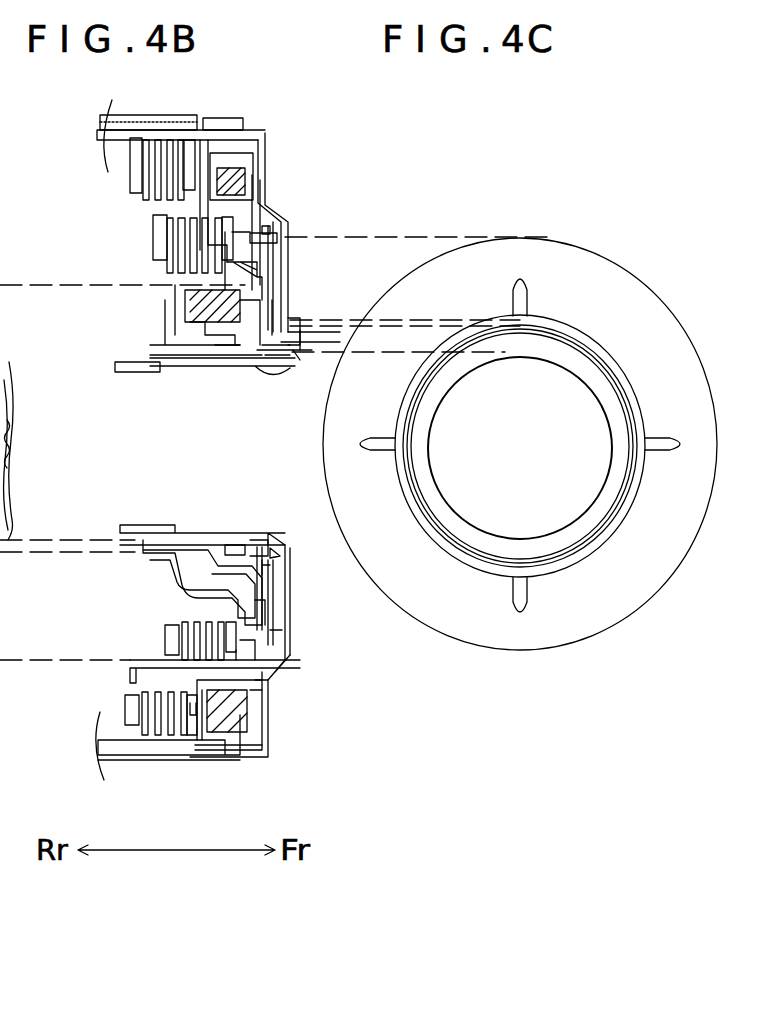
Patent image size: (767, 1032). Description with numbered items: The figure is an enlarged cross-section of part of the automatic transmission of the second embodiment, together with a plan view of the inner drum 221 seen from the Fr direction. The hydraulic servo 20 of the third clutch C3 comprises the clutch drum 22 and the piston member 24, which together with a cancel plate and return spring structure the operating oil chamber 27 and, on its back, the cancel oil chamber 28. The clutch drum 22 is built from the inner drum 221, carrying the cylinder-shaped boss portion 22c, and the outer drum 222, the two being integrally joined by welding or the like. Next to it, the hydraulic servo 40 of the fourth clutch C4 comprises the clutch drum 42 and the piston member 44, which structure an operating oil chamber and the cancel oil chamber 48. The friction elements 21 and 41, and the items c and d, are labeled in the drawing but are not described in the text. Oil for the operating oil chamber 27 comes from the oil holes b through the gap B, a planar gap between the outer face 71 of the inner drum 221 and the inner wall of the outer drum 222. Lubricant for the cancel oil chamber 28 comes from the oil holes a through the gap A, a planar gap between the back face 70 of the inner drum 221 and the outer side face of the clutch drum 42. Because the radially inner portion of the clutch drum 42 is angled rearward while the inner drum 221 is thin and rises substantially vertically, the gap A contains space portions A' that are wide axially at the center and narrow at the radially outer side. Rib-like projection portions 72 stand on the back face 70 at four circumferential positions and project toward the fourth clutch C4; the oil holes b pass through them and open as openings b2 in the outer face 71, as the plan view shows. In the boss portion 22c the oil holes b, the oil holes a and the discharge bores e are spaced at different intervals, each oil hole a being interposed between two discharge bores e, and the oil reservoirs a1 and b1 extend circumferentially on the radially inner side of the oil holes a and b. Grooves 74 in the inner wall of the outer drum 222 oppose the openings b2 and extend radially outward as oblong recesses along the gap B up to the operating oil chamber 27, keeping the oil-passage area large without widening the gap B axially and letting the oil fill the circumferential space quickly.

In FIG. 4B, the hydraulic servo 20 is at (262, 268).
In FIG. 4B, the clutch 21 is at (121, 193).
In FIG. 4B, the clutch drum 22 is at (280, 657).
In FIG. 4B, the inner drum 221 is at (277, 553).
In FIG. 4C, the inner drum 221 is at (608, 224).
In FIG. 4B, the outer drum 222 is at (262, 722).
In FIG. 4B, the boss portion 22c is at (182, 372).
In FIG. 4B, the piston member 24 is at (240, 150).
In FIG. 4B, the operating oil chamber 27 is at (272, 670).
In FIG. 4B, the cancel oil chamber 28 is at (227, 728).
In FIG. 4B, the hydraulic servo 40 is at (275, 270).
In FIG. 4B, the clutch 41 is at (148, 265).
In FIG. 4B, the clutch drum 42 is at (263, 613).
In FIG. 4B, the piston member 44 is at (270, 207).
In FIG. 4B, the cancel oil chamber 48 is at (207, 576).
In FIG. 4B, the back face 70 is at (262, 575).
In FIG. 4C, the outer face 71 is at (618, 576).
In FIG. 4B, the projection portions 72 is at (266, 348).
In FIG. 4B, the grooves 74 is at (283, 266).
In FIG. 4B, the gap A is at (299, 268).
In FIG. 4B, the space portions A' is at (280, 507).
In FIG. 4B, the gap B is at (277, 633).
In FIG. 4B, the oil holes a is at (263, 540).
In FIG. 4B, the oil reservoir a1 is at (240, 545).
In FIG. 4B, the oil holes b is at (285, 332).
In FIG. 4B, the oil reservoir b1 is at (298, 362).
In FIG. 4C, the opening portion b2 is at (510, 284).
In FIG. 4B, the oil passage c is at (222, 360).
In FIG. 4B, the oil passage d is at (140, 372).
In FIG. 4B, the discharge bores e is at (265, 540).
In FIG. 4B, the third clutch C3 is at (114, 705).
In FIG. 4B, the fourth clutch C4 is at (152, 633).